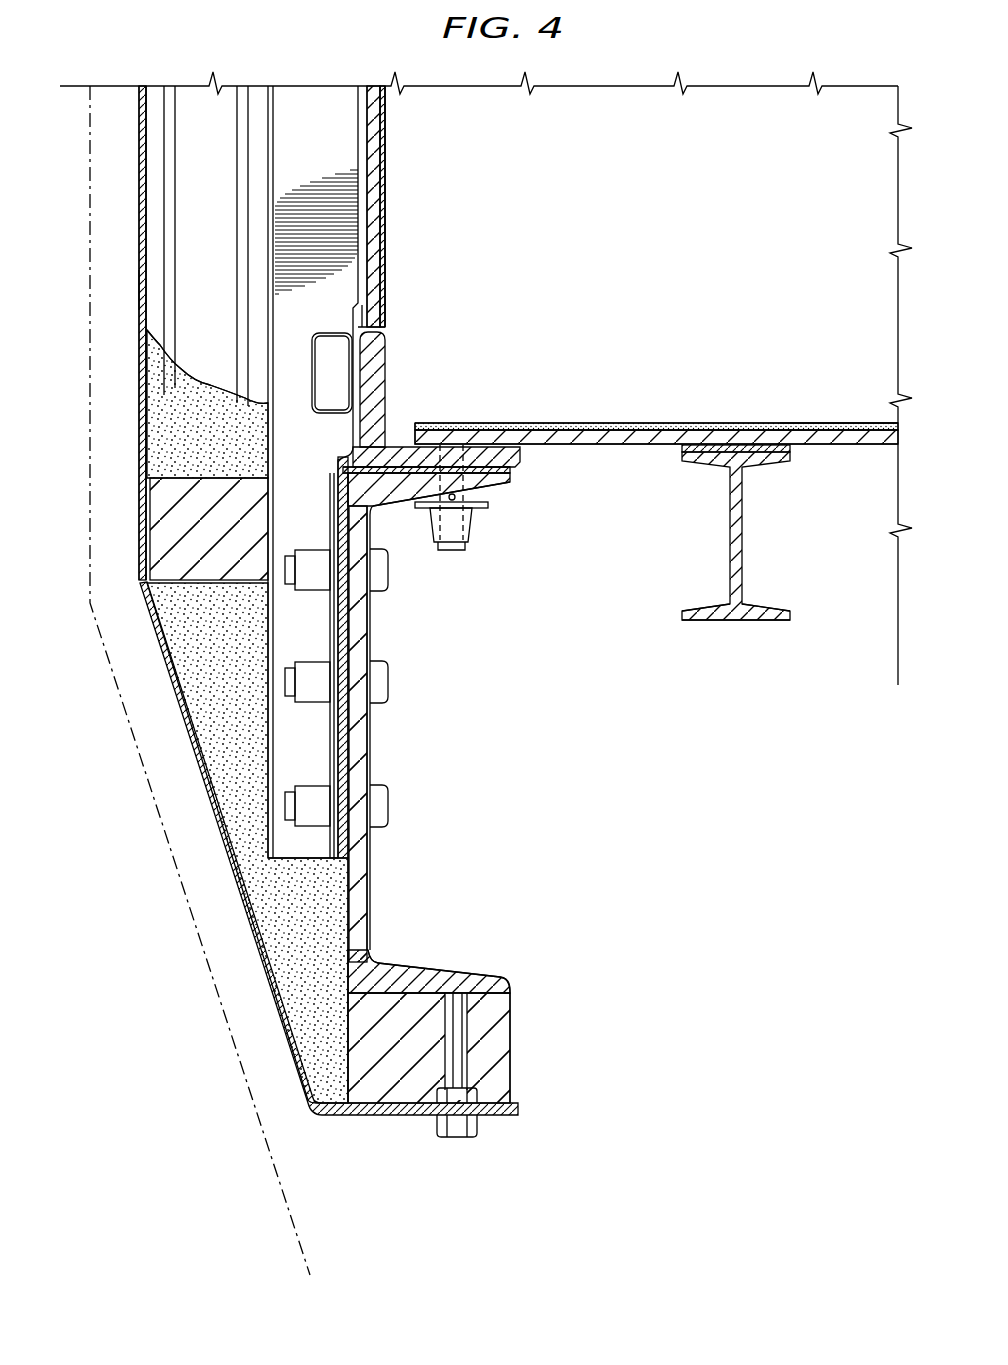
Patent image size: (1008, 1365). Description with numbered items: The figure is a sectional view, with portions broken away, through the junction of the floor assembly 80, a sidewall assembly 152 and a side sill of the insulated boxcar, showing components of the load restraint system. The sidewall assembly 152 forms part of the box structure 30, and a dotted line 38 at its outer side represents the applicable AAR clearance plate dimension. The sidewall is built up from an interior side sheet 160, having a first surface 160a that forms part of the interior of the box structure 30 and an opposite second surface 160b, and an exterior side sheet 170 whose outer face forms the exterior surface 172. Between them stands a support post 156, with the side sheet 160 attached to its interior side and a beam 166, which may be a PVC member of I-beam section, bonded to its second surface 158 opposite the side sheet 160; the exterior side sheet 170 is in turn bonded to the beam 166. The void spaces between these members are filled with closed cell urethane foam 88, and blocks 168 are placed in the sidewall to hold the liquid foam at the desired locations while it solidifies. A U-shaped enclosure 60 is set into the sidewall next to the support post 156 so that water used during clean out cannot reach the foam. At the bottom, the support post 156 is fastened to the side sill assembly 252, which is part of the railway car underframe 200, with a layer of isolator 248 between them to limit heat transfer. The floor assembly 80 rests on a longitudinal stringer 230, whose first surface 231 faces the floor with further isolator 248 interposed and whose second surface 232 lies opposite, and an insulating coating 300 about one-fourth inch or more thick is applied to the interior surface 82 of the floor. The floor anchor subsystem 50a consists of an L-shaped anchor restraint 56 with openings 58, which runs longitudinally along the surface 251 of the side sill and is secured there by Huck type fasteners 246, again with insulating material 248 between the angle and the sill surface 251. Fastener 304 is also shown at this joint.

The box structure 30 is at (129, 351).
The dotted line 38 is at (207, 985).
The floor anchor subsystem 50a is at (466, 371).
The anchor restraint 56 is at (388, 403).
The openings 58 is at (393, 362).
The U-shaped enclosure 60 is at (330, 333).
The floor assembly 80 is at (841, 425).
The interior surface of floor assembly 82 is at (677, 423).
The closed cell urethane foam 88 is at (165, 430).
The sidewall assembly 152 is at (138, 290).
The support post 156 is at (310, 100).
The second surface of support post 158 is at (265, 838).
The interior side sheet 160 is at (376, 86).
The first surface of side sheet 160a is at (387, 175).
The second surface of side sheet 160b is at (367, 157).
The beam 166 is at (198, 100).
The block 168 is at (168, 515).
The exterior side sheet 170 is at (138, 177).
The exterior surface 172 is at (140, 230).
The railway car underframe 200 is at (562, 692).
The longitudinal stringer 230 is at (728, 530).
The first surface 231 is at (795, 452).
The second surface 232 is at (728, 620).
The Huck type fastener 246 is at (454, 552).
The isolator 248 is at (346, 447).
The surface of side sill 251 is at (540, 468).
The side sill assembly 252 is at (371, 885).
The insulating coating 300 is at (385, 240).
The bolt 304 is at (502, 494).